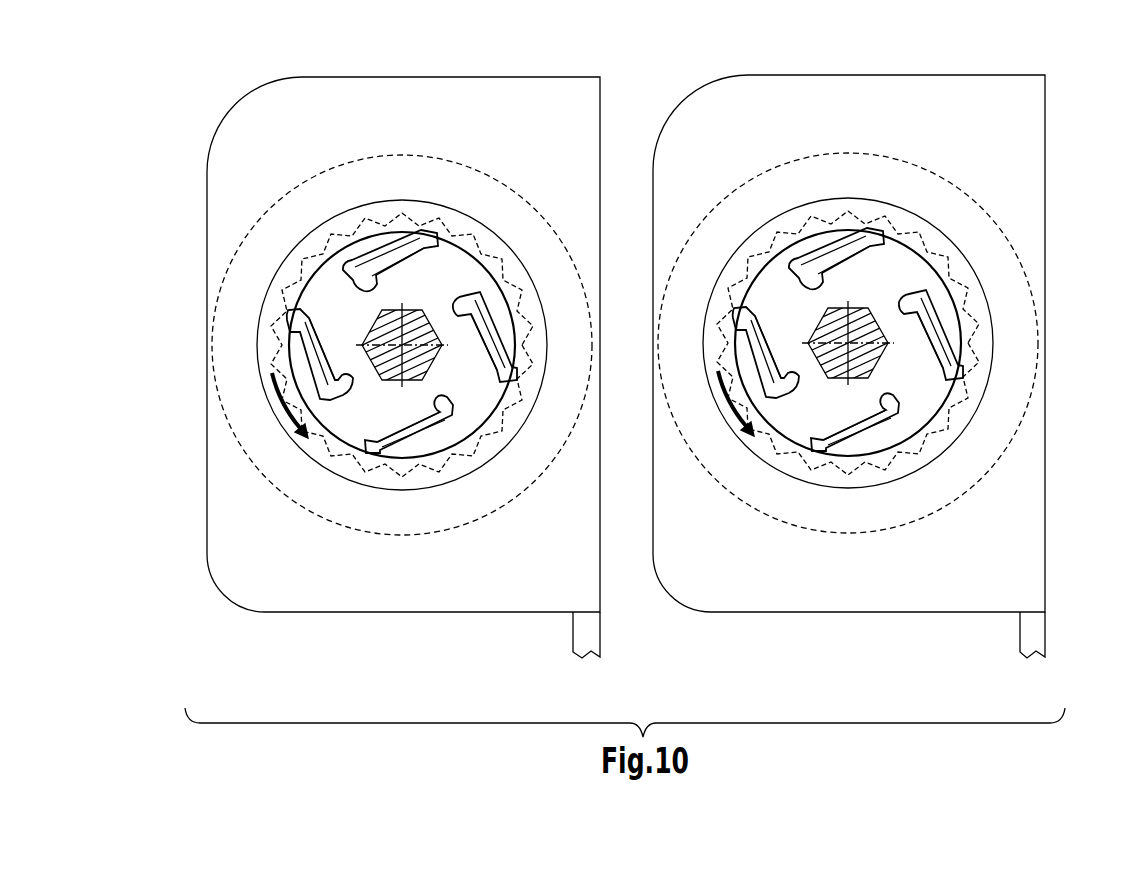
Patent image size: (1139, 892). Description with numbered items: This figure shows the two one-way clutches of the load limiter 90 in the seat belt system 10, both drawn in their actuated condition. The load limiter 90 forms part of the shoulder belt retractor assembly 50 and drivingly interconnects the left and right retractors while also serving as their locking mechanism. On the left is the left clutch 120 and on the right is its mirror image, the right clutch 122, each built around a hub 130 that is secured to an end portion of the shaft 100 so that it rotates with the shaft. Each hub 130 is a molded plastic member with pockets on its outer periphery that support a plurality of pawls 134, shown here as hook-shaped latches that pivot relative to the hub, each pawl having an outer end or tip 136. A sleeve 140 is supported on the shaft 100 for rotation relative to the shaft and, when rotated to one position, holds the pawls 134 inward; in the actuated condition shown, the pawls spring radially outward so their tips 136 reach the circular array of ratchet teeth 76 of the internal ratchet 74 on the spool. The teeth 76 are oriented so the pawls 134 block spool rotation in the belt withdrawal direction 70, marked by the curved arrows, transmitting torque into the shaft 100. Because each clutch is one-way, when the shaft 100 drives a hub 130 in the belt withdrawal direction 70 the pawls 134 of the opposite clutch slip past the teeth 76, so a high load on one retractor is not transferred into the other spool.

The seat belt system 10 is at (625, 385).
The shoulder belt retractor assembly 50 is at (626, 381).
The load limiter 90 is at (608, 675).
The belt withdrawal direction 70 is at (280, 405).
The internal ratchet 74 is at (357, 540).
The ratchet teeth 76 is at (567, 384).
The shaft 100 is at (377, 312).
The left one-way clutch 120 is at (262, 497).
The right one-way clutch 122 is at (722, 520).
The hub 130 is at (635, 333).
The pawl 134 is at (635, 365).
The tip 136 is at (635, 333).
The sleeve 140 is at (317, 227).